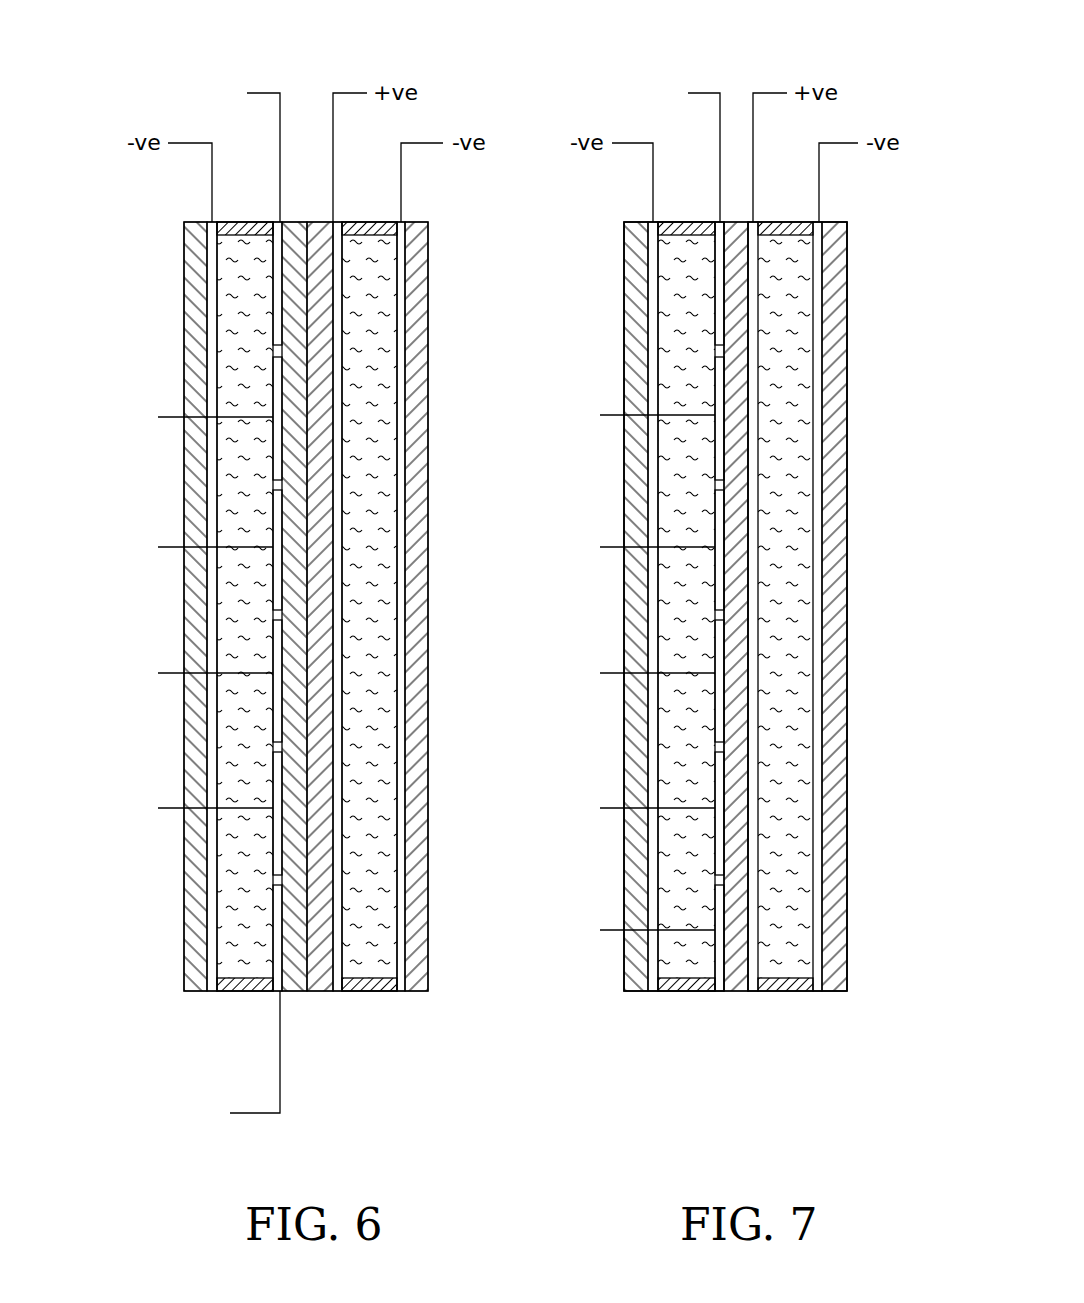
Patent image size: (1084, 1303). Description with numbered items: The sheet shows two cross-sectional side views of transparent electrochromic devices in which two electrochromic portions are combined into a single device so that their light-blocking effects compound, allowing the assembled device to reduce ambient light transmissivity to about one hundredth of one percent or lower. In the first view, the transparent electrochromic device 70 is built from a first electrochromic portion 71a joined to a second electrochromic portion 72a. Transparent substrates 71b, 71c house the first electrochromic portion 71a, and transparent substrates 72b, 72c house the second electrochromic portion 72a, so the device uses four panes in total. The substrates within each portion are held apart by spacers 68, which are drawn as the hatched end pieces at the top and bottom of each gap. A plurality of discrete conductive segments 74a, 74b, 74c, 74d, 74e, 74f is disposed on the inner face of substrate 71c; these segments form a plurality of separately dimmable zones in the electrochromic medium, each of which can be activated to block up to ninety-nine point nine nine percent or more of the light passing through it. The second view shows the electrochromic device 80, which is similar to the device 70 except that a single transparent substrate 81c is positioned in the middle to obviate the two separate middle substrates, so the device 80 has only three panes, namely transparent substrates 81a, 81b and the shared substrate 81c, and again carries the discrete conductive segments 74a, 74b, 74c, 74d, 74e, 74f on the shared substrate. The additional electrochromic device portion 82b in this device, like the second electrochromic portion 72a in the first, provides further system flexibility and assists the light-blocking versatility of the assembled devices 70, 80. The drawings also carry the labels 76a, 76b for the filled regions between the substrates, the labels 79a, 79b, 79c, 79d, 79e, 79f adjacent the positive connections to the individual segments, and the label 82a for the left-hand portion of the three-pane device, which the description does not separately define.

In FIG. 6, the spacer 68 is at (247, 222).
In FIG. 7, the spacer 68 is at (735, 606).
In FIG. 6, the transparent electrochromic device 70 is at (150, 487).
In FIG. 6, the first electrochromic portion 71a is at (247, 997).
In FIG. 6, the transparent substrate 71b is at (187, 992).
In FIG. 6, the transparent substrate 71c is at (294, 992).
In FIG. 6, the second electrochromic portion 72a is at (378, 995).
In FIG. 6, the transparent substrate 72b is at (428, 952).
In FIG. 6, the transparent substrate 72c is at (315, 992).
In FIG. 6, the discrete conductive segment 74a is at (273, 310).
In FIG. 7, the discrete conductive segment 74a is at (715, 265).
In FIG. 6, the discrete conductive segment 74b is at (273, 368).
In FIG. 7, the discrete conductive segment 74b is at (715, 377).
In FIG. 6, the discrete conductive segment 74c is at (273, 595).
In FIG. 7, the discrete conductive segment 74c is at (715, 502).
In FIG. 6, the discrete conductive segment 74d is at (273, 717).
In FIG. 7, the discrete conductive segment 74d is at (715, 633).
In FIG. 6, the discrete conductive segment 74e is at (273, 847).
In FIG. 7, the discrete conductive segment 74e is at (715, 760).
In FIG. 6, the discrete conductive segment 74f is at (273, 897).
In FIG. 7, the discrete conductive segment 74f is at (715, 887).
In FIG. 6, the electrolyte 76a is at (245, 290).
In FIG. 7, the electrolyte 76a is at (707, 330).
In FIG. 6, the electrolyte 76b is at (370, 310).
In FIG. 7, the electrolyte 76b is at (790, 298).
In FIG. 6, the positive lead 79a is at (257, 93).
In FIG. 7, the positive lead 79a is at (692, 93).
In FIG. 6, the positive lead 79b is at (162, 417).
In FIG. 7, the positive lead 79b is at (603, 415).
In FIG. 6, the positive lead 79c is at (162, 547).
In FIG. 7, the positive lead 79c is at (603, 547).
In FIG. 6, the positive lead 79d is at (162, 673).
In FIG. 7, the positive lead 79d is at (603, 673).
In FIG. 6, the positive lead 79e is at (162, 808).
In FIG. 7, the positive lead 79e is at (603, 808).
In FIG. 6, the positive lead 79f is at (282, 1097).
In FIG. 7, the positive lead 79f is at (603, 930).
In FIG. 7, the electrochromic device 80 is at (870, 531).
In FIG. 7, the transparent substrate 81a is at (635, 992).
In FIG. 7, the transparent substrate 81b is at (832, 992).
In FIG. 7, the single transparent substrate 81c is at (735, 992).
In FIG. 7, the first cell 82a is at (612, 968).
In FIG. 7, the electrochromic device portion 82b is at (862, 962).